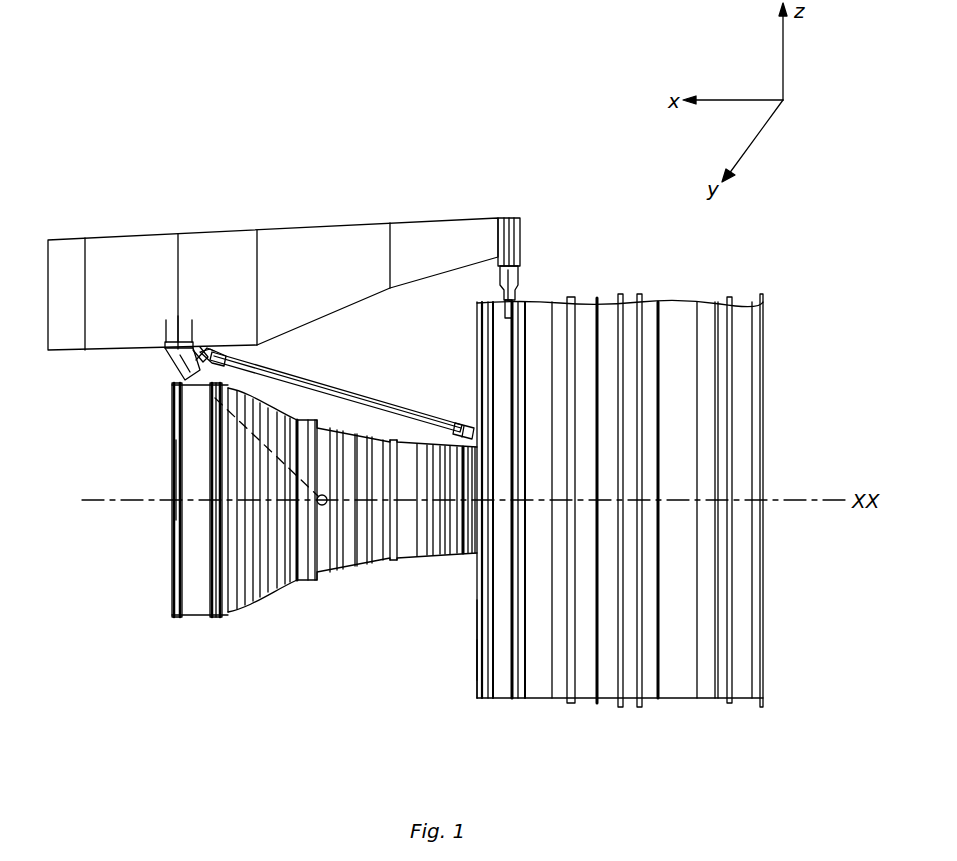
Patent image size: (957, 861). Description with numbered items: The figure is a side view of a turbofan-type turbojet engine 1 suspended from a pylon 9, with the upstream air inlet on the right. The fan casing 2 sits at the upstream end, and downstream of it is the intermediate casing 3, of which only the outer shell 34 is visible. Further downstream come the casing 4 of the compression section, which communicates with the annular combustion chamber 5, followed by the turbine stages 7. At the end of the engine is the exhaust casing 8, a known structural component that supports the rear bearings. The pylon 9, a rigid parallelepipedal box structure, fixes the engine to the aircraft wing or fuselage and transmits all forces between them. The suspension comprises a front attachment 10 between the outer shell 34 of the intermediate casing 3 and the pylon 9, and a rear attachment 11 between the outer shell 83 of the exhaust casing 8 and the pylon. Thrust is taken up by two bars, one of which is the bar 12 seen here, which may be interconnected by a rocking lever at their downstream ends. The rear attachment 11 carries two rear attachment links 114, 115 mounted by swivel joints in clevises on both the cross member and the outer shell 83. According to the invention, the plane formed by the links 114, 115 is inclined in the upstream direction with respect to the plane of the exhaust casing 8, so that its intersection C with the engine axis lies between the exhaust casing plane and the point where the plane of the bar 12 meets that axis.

The turbojet engine 1 is at (672, 735).
The fan casing 2 is at (706, 440).
The intermediate casing 3 is at (500, 700).
The casing of the compression section 4 is at (442, 548).
The combustion chamber 5 is at (395, 560).
The turbine stages 7 is at (297, 583).
The exhaust casing 8 is at (172, 578).
The pylon 9 is at (320, 247).
The front attachment 10 is at (522, 262).
The rear attachment 11 is at (168, 350).
The bar 12 is at (340, 385).
The outer shell of the intermediate casing 34 is at (477, 652).
The outer shell of the exhaust casing 83 is at (190, 473).
The rear attachment link 114 is at (172, 398).
The rear attachment link 115 is at (101, 447).
The intersection of the link plane with the axis C is at (325, 505).